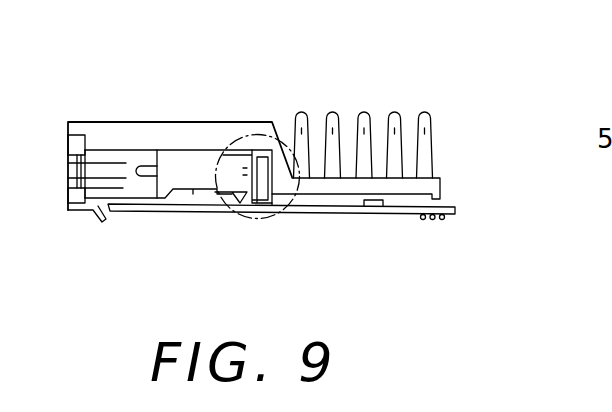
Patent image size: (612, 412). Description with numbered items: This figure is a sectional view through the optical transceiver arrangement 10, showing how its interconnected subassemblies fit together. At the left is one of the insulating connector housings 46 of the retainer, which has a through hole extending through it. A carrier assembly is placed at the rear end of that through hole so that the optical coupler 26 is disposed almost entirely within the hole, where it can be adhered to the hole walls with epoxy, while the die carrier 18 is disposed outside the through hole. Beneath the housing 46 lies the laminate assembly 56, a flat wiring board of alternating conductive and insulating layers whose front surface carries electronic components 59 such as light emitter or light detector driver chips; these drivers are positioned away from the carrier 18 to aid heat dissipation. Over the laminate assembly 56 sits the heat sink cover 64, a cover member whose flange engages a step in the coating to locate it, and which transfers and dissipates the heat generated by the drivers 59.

The optical transceiver arrangement 10 is at (280, 148).
The die carrier 18 is at (282, 207).
The optical coupler 26 is at (187, 172).
The connector housing 46 is at (113, 122).
The laminate assembly 56 is at (182, 226).
The electronic components 59 is at (374, 208).
The heat sink cover 64 is at (437, 185).